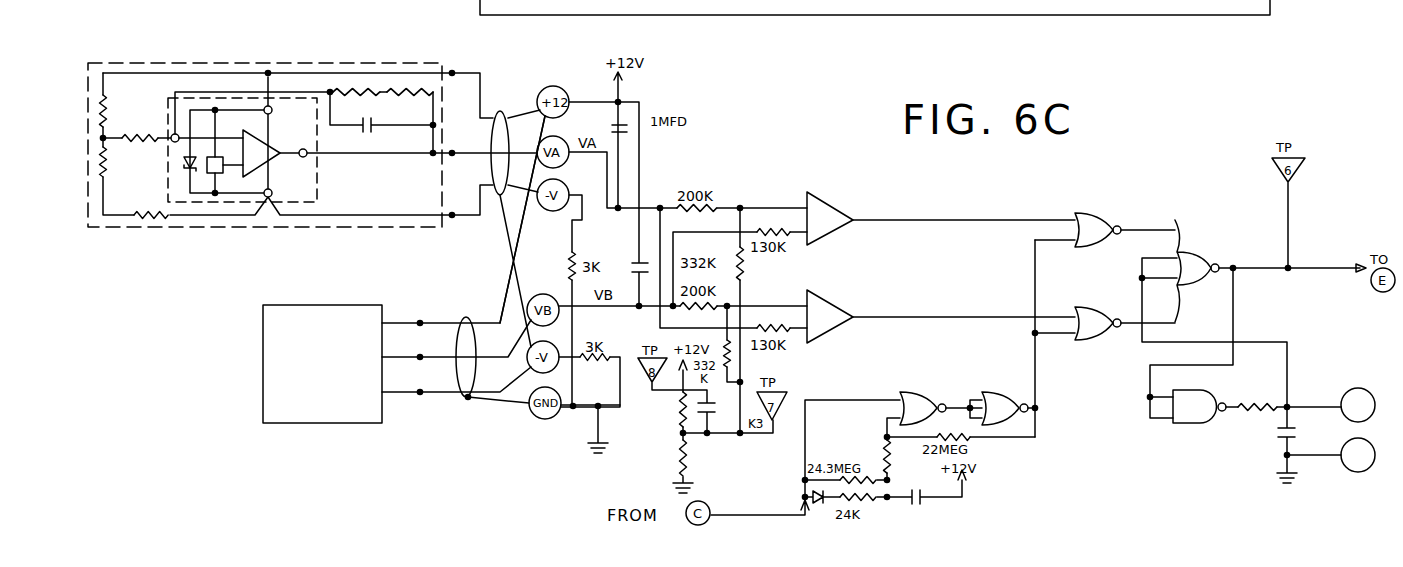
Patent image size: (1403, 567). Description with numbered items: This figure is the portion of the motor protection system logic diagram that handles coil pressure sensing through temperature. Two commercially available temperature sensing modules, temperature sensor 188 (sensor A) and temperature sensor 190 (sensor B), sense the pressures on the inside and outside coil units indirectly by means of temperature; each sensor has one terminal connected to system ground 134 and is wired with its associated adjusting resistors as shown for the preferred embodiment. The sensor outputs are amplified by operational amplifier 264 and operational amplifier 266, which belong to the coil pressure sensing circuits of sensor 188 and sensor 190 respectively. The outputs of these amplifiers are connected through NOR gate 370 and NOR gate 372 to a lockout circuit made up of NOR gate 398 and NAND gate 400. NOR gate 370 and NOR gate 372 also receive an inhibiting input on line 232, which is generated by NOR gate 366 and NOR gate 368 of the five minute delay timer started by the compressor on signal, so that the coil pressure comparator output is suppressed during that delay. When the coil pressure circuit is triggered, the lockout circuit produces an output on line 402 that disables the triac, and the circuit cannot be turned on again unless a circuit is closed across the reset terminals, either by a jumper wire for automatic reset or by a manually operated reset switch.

The temperature sensor 188 is at (393, 63).
The temperature sensor 190 is at (345, 305).
The system ground 134 is at (600, 427).
The operational amplifier 264 is at (836, 240).
The operational amplifier 266 is at (836, 337).
The NOR gate 366 is at (937, 379).
The NOR gate 368 is at (995, 393).
The line 232 is at (1037, 388).
The NOR gate 370 is at (1117, 204).
The NOR gate 372 is at (1090, 341).
The NOR gate 398 is at (1222, 241).
The line 402 is at (1287, 368).
The NAND gate 400 is at (1192, 425).